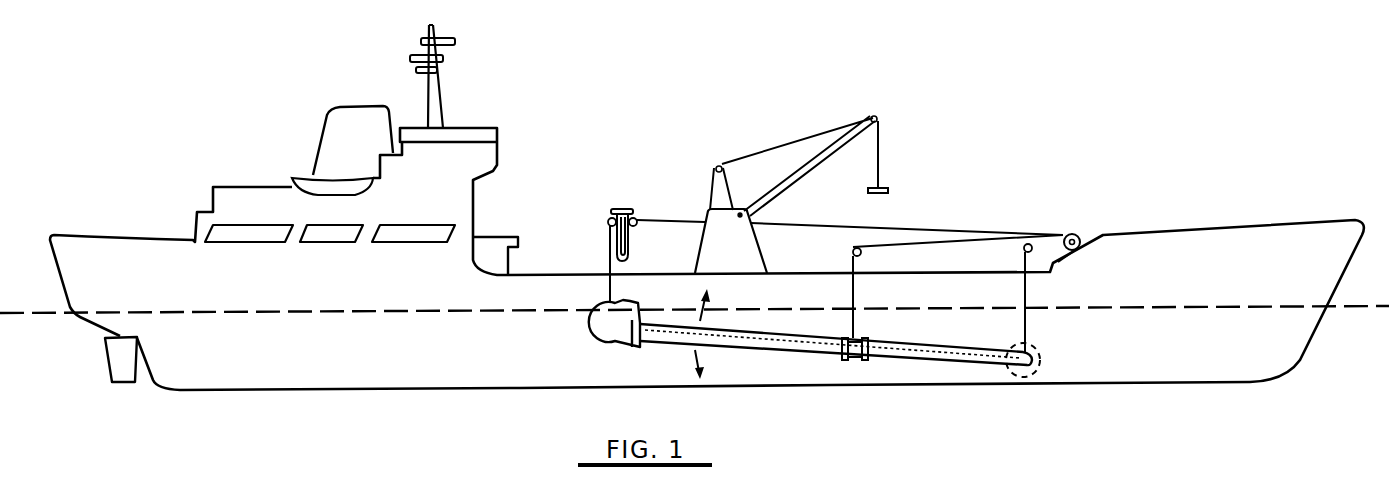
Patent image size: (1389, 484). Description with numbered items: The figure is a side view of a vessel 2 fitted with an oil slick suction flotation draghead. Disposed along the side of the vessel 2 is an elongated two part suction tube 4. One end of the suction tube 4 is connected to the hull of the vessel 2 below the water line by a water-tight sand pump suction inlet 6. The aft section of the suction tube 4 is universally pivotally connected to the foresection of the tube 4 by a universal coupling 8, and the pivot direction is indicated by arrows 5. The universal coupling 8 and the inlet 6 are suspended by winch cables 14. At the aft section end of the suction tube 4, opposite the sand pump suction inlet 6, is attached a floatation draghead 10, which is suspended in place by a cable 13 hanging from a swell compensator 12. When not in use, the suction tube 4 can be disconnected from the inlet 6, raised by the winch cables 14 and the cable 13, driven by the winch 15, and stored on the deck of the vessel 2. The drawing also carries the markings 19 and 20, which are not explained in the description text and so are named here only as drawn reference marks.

The vessel 2 is at (962, 110).
The two part suction tube 4 is at (753, 352).
The arrows 5 is at (702, 301).
The sand pump suction inlet 6 is at (1030, 378).
The universal coupling 8 is at (851, 362).
The floatation draghead 10 is at (604, 344).
The swell compensator 12 is at (613, 198).
The cable 13 is at (663, 218).
The winch cables 14 is at (1017, 288).
The winch 15 is at (1082, 230).
The waterline 19 is at (1225, 306).
The detail zone 20 is at (1043, 350).